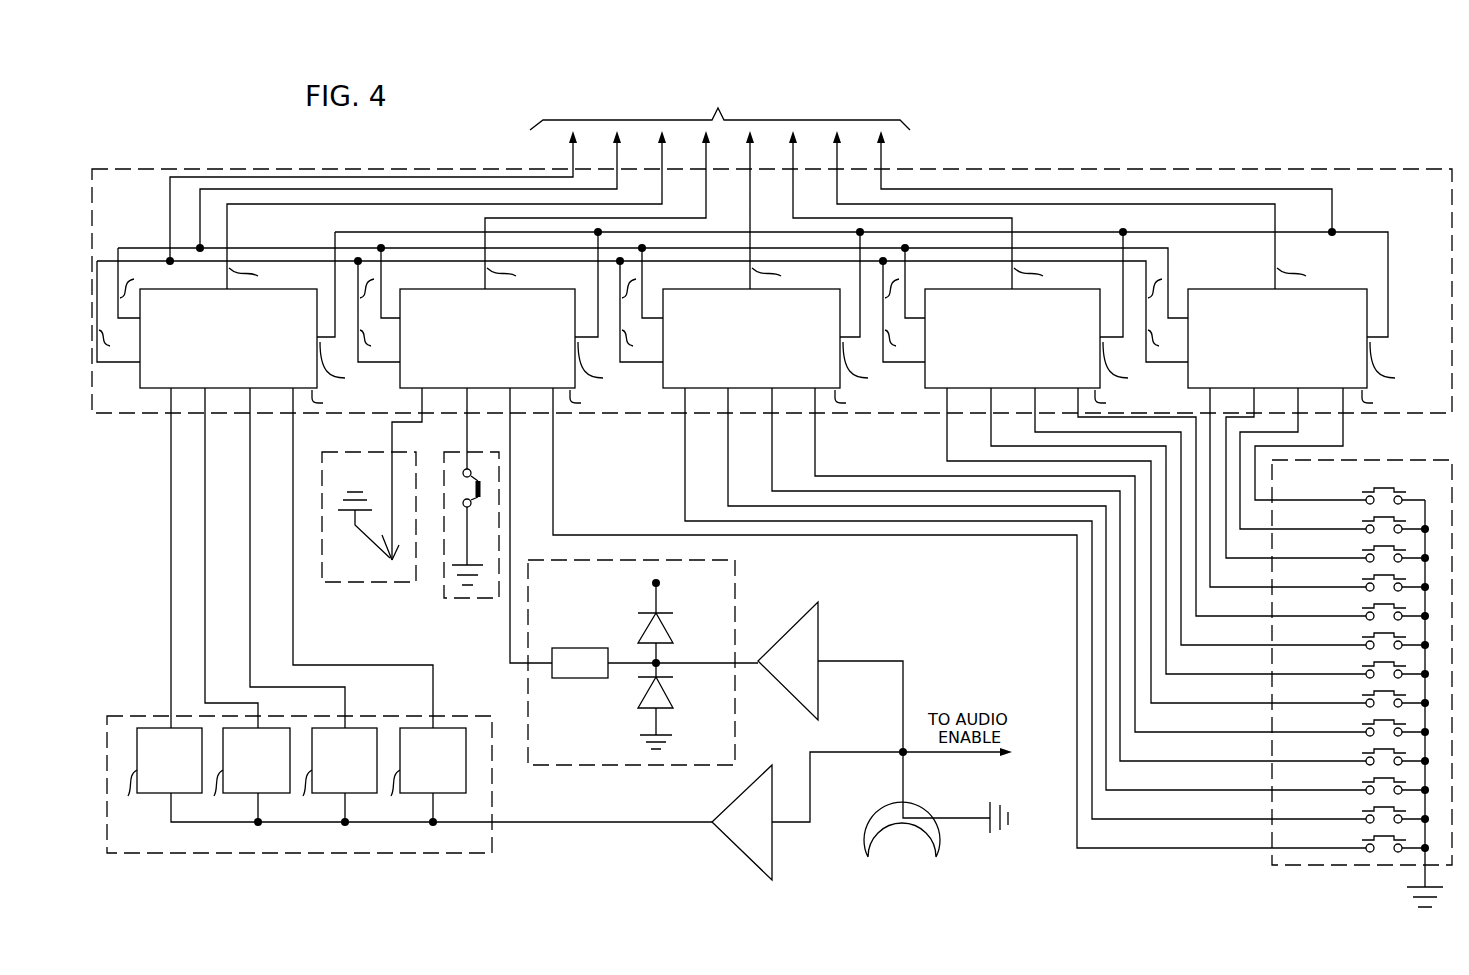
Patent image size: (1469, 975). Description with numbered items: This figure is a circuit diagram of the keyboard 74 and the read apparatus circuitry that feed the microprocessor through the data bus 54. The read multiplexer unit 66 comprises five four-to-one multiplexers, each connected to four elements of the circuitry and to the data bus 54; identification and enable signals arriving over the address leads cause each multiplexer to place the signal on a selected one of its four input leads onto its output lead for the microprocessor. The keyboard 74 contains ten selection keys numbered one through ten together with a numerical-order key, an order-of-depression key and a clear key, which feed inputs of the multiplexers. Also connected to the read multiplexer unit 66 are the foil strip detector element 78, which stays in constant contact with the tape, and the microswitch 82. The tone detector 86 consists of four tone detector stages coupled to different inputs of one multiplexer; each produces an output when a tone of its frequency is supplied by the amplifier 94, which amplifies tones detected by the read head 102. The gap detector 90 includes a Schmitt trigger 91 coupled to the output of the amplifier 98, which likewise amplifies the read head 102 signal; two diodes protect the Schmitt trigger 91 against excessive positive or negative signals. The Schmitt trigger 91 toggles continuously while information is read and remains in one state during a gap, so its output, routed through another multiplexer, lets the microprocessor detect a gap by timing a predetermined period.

The data bus 54 is at (751, 187).
The read multiplexer unit 66 is at (1047, 169).
The keyboard 74 is at (1307, 865).
The foil strip detector element 78 is at (322, 582).
The microswitch 82 is at (485, 598).
The tone detector 86 is at (452, 716).
The gap detector 90 is at (737, 562).
The Schmitt trigger 91 is at (575, 648).
The amplifier 94 is at (743, 791).
The amplifier 98 is at (820, 614).
The read head 102 is at (943, 855).